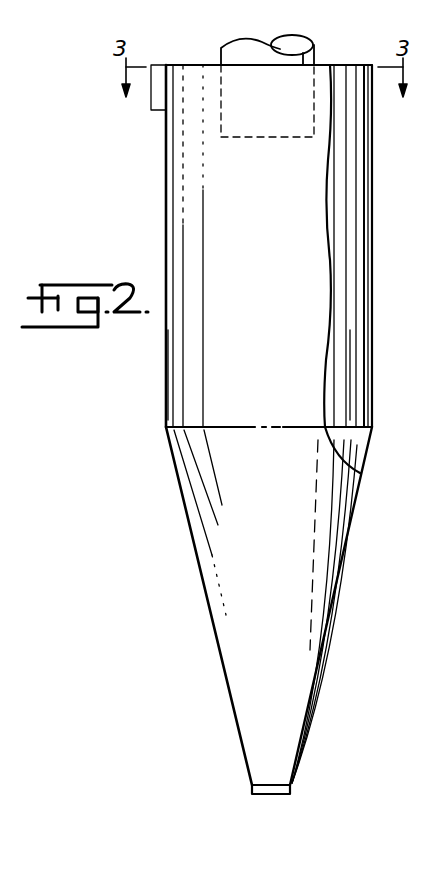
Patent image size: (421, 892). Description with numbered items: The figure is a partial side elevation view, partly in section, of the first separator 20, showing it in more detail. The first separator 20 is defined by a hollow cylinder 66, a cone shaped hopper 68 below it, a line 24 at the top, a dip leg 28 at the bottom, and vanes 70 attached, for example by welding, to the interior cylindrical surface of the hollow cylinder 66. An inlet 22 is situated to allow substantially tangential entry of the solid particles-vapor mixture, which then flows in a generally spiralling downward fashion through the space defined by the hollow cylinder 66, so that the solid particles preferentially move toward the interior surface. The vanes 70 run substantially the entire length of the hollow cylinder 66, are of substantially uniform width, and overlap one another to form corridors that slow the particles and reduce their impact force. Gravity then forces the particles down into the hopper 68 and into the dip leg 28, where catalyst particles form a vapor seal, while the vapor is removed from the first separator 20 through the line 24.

The first separator 20 is at (158, 234).
The inlet 22 is at (160, 110).
The line 24 is at (221, 49).
The dip leg 28 is at (293, 786).
The hollow cylinder 66 is at (167, 366).
The cone shaped hopper 68 is at (207, 598).
The vanes 70 is at (353, 407).